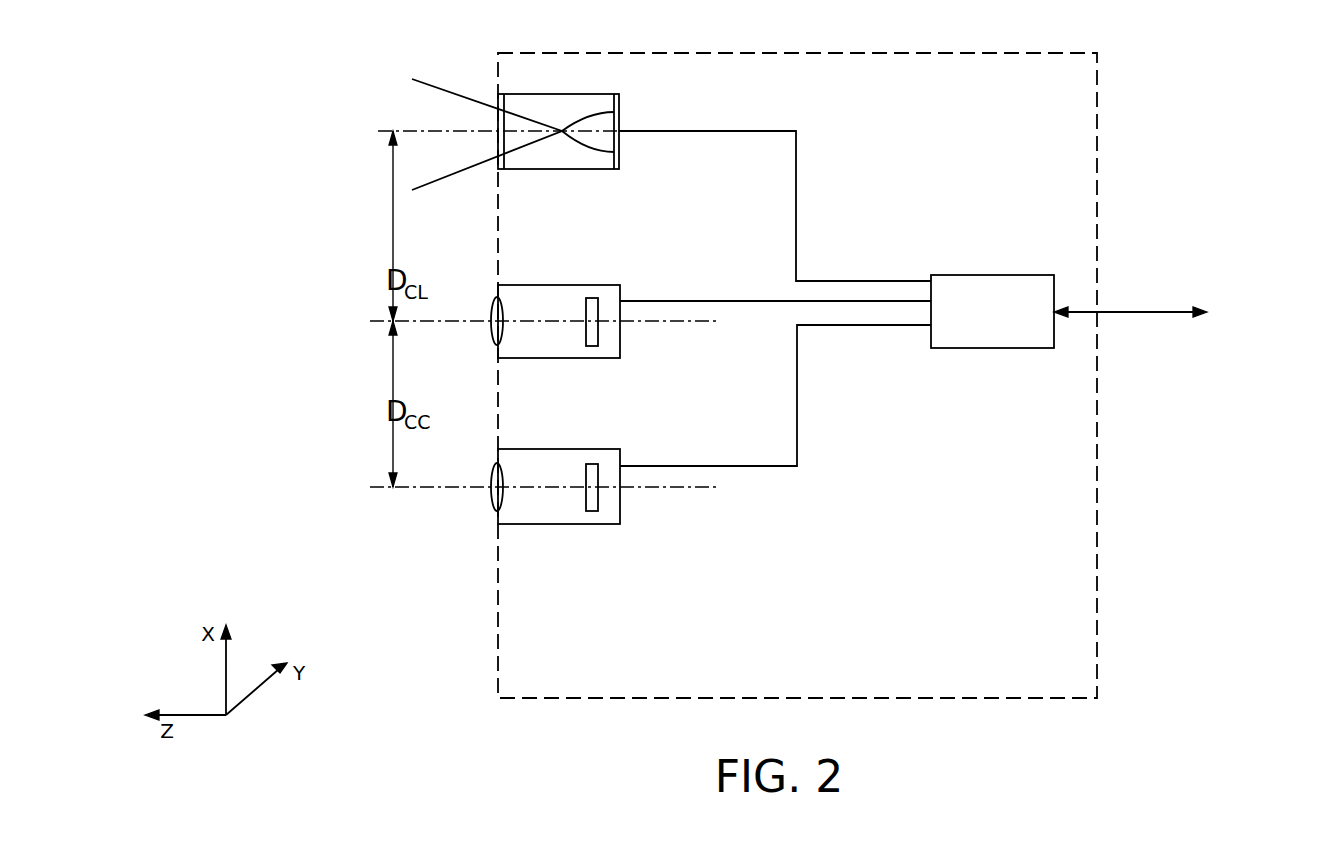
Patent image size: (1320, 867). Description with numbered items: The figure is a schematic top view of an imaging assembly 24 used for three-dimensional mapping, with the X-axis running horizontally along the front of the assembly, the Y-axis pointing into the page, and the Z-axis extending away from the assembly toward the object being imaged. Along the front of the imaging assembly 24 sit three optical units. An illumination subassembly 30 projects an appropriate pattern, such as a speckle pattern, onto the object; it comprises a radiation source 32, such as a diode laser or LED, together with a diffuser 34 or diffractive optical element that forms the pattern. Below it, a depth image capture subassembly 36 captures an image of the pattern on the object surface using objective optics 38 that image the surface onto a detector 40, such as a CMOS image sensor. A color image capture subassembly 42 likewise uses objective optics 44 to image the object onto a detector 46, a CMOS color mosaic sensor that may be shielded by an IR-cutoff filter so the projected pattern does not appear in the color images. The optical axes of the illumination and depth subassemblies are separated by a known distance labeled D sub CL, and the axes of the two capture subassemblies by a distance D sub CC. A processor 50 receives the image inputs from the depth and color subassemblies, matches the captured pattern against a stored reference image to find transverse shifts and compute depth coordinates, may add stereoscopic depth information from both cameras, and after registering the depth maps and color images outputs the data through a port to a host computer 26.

The imaging assembly 24 is at (1097, 147).
The host computer 26 is at (1183, 318).
The illumination subassembly 30 is at (567, 94).
The radiation source 32 is at (575, 148).
The diffuser 34 is at (498, 101).
The depth image capture subassembly 36 is at (562, 285).
The objective optics 38 is at (496, 300).
The detector 40 is at (590, 346).
The color image capture subassembly 42 is at (621, 516).
The objective optics 44 is at (497, 466).
The detector 46 is at (591, 511).
The processor 50 is at (996, 275).